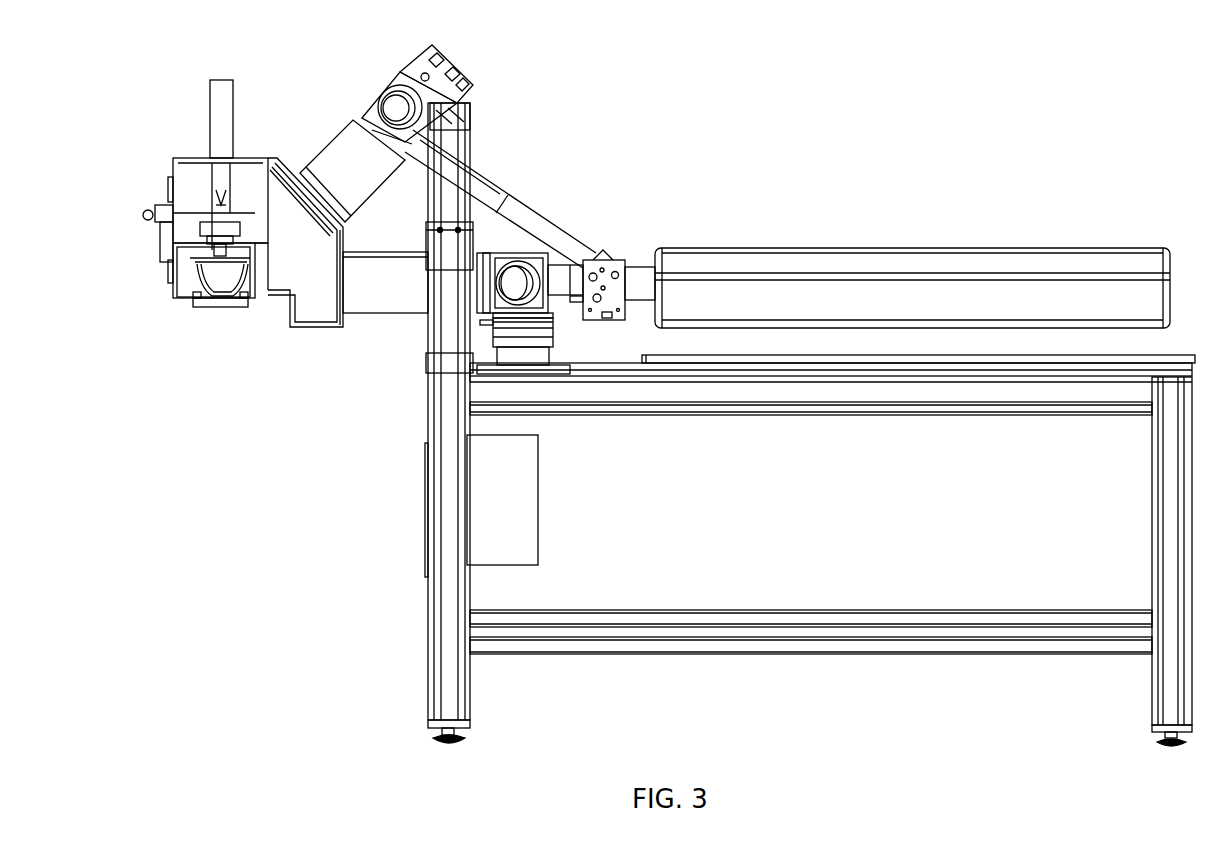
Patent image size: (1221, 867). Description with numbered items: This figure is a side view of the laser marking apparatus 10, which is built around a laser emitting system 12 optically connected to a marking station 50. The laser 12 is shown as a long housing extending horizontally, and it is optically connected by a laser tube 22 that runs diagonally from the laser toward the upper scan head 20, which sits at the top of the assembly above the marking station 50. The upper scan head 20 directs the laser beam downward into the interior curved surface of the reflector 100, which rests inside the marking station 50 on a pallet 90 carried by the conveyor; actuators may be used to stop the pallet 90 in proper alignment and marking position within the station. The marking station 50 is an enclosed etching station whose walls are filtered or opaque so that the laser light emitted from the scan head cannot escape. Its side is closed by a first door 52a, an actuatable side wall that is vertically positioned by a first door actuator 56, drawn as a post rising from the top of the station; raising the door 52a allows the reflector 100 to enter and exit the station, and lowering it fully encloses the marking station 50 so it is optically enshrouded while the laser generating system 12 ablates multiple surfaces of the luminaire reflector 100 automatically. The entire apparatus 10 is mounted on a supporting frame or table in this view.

The laser marking apparatus 10 is at (643, 130).
The laser emitting system 12 is at (922, 250).
The upper scan head 20 is at (443, 52).
The laser tube 22 is at (530, 217).
The marking station 50 is at (155, 191).
The first door 52a is at (190, 165).
The first door actuator 56 is at (227, 104).
The pallet 90 is at (237, 307).
The reflector 100 is at (217, 290).